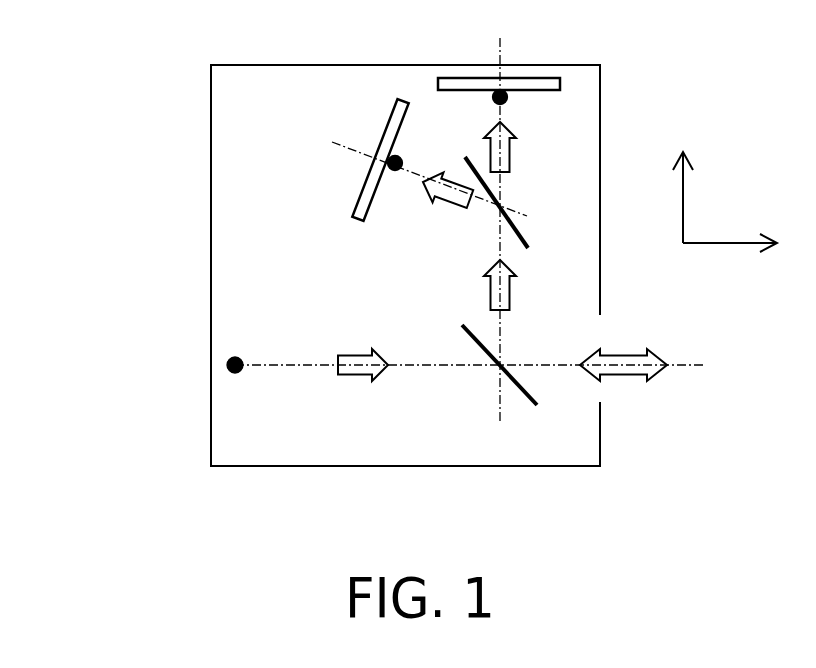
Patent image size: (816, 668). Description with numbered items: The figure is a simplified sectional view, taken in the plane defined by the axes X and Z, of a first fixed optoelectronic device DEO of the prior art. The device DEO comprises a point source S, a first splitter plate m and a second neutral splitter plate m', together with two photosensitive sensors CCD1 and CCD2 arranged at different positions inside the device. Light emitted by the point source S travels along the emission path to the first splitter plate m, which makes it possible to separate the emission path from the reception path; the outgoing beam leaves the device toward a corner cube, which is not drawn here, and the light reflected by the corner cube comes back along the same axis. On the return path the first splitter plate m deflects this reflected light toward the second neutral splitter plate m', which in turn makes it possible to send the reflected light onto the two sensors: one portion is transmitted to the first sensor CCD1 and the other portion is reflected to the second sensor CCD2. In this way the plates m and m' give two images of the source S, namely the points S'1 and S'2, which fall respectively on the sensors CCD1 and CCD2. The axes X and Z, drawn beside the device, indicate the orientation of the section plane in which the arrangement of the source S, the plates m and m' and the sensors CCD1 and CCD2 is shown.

The fixed optoelectronic device DEO is at (147, 305).
The point source S is at (241, 394).
The first splitter plate m is at (493, 372).
The second neutral splitter plate m' is at (488, 209).
The photosensitive sensor CCD1 is at (518, 77).
The photosensitive sensor CCD2 is at (355, 205).
The image of the source S'1 is at (522, 123).
The image of the source S'2 is at (405, 191).
The Z axis Z is at (683, 184).
The X axis X is at (739, 243).